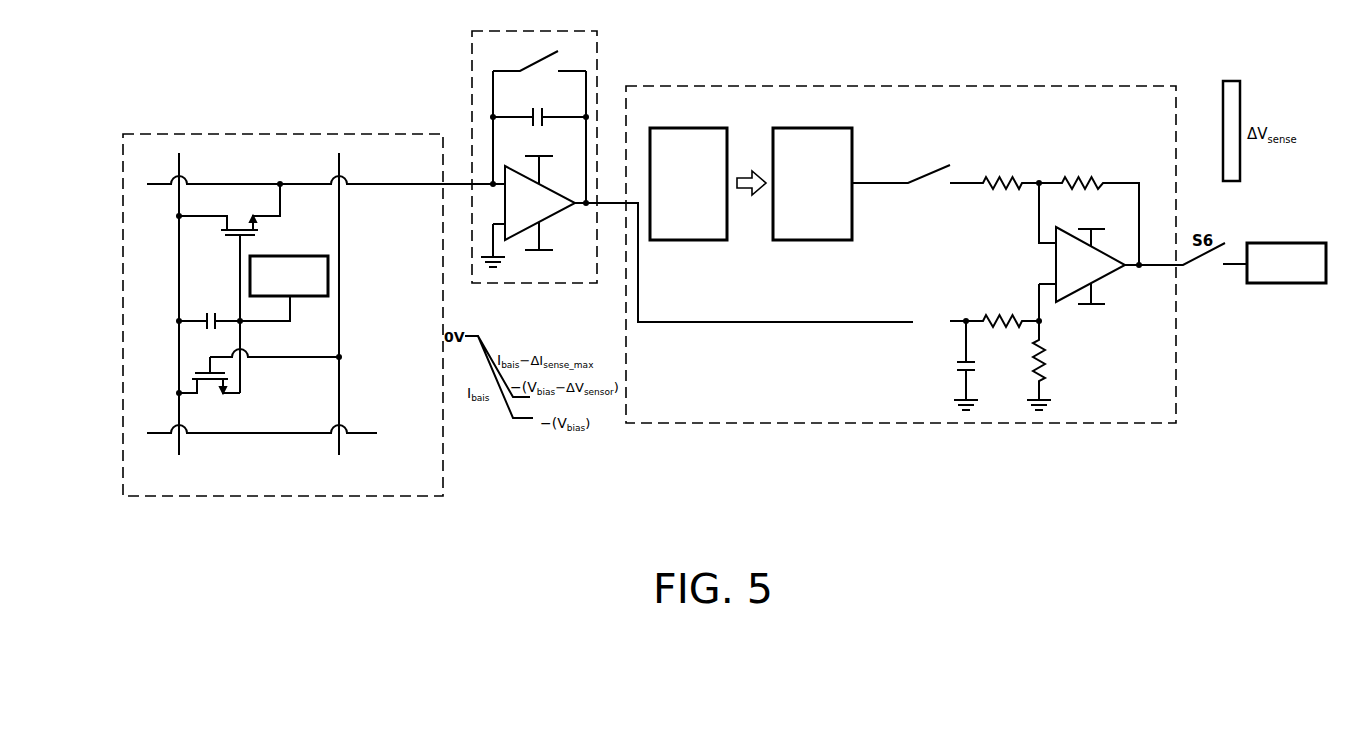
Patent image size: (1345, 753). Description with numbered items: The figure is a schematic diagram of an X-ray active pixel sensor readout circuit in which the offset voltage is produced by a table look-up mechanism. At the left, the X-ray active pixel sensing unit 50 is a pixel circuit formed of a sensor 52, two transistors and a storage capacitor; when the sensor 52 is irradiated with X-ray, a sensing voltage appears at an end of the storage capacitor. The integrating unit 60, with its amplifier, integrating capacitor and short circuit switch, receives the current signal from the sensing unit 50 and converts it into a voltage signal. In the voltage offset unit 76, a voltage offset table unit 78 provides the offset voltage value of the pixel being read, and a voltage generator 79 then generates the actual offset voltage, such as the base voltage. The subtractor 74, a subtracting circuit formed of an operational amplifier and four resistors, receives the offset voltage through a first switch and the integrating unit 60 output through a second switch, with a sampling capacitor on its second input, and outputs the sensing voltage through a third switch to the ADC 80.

The X-ray active pixel sensing unit 50 is at (294, 134).
The sensor 52 is at (296, 256).
The integrating unit 60 is at (535, 283).
The subtractor 74 is at (1040, 268).
The voltage offset unit 76 is at (936, 241).
The voltage offset table unit 78 is at (690, 128).
The voltage generator 79 is at (815, 128).
The ADC 80 is at (1290, 243).